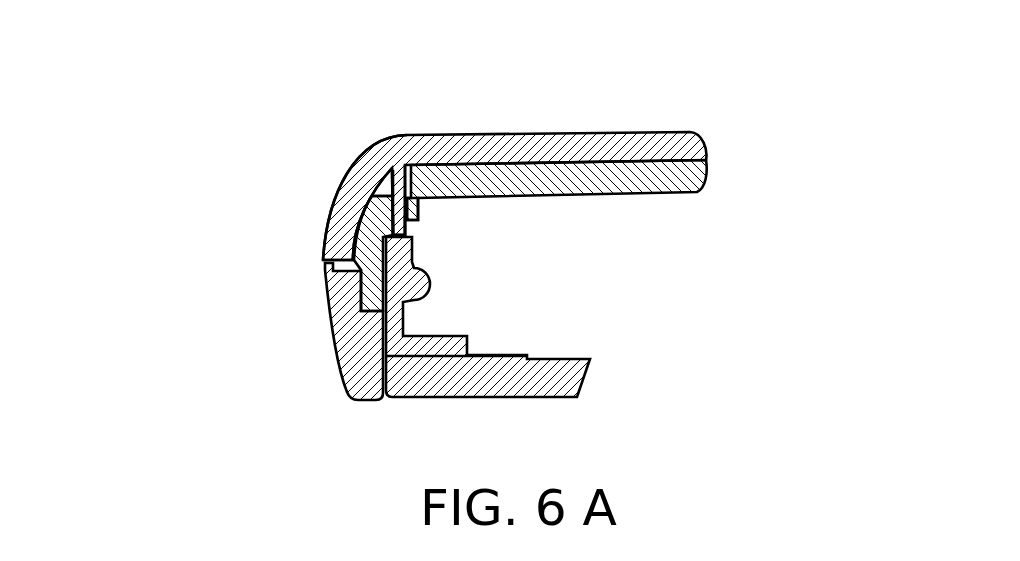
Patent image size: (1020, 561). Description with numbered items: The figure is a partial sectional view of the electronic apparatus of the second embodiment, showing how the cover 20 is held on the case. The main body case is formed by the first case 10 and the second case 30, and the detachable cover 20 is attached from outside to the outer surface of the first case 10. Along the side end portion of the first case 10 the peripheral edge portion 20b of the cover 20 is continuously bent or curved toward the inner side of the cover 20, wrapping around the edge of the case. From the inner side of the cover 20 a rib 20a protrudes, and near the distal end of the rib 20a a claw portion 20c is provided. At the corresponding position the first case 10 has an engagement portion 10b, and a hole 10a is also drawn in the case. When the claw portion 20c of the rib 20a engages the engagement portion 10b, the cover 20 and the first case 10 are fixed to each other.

The first case 10 is at (658, 193).
The hole 10a is at (390, 218).
The engagement portion 10b is at (417, 200).
The cover 20 is at (555, 130).
The rib 20a is at (368, 155).
The peripheral edge portion 20b is at (350, 218).
The claw portion 20c is at (418, 205).
The second case 30 is at (335, 357).